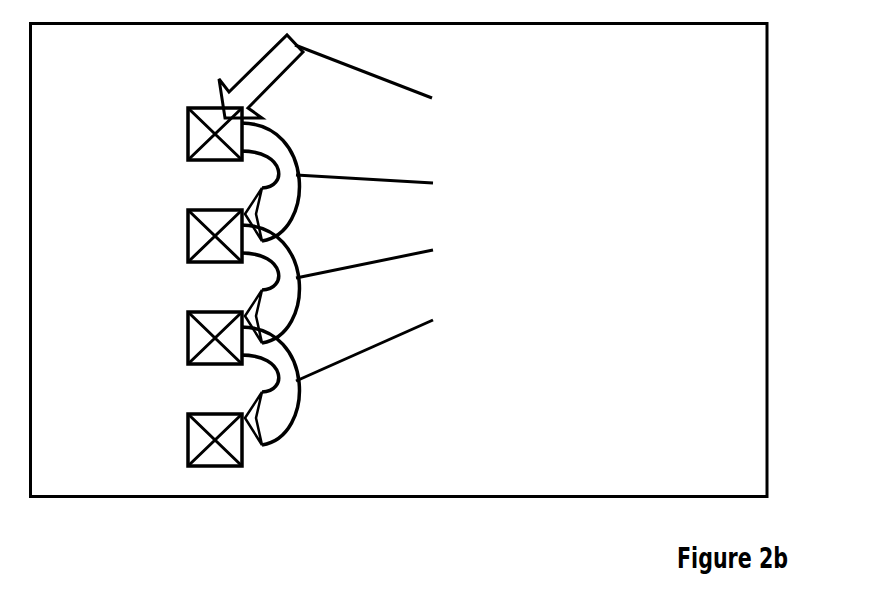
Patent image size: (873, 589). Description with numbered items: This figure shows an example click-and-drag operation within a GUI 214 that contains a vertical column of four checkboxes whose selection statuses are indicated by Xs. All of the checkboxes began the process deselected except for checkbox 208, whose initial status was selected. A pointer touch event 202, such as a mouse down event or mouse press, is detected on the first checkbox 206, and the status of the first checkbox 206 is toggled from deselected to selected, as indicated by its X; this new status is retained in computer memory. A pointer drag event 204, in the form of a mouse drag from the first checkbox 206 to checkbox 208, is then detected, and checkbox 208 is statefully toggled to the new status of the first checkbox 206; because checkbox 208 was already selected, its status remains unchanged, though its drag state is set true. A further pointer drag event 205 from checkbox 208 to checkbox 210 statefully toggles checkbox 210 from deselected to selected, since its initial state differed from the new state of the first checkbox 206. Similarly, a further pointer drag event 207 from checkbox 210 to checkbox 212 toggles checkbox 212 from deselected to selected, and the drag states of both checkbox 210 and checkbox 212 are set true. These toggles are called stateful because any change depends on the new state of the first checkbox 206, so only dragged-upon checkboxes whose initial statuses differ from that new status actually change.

The pointer touch event 202 is at (607, 102).
The pointer drag event 204 is at (592, 183).
The further pointer drag event 205 is at (592, 250).
The further pointer drag event 207 is at (592, 320).
The first checkbox 206 is at (187, 135).
The checkbox 208 is at (187, 237).
The checkbox 210 is at (188, 340).
The checkbox 212 is at (188, 443).
The GUI 214 is at (768, 258).